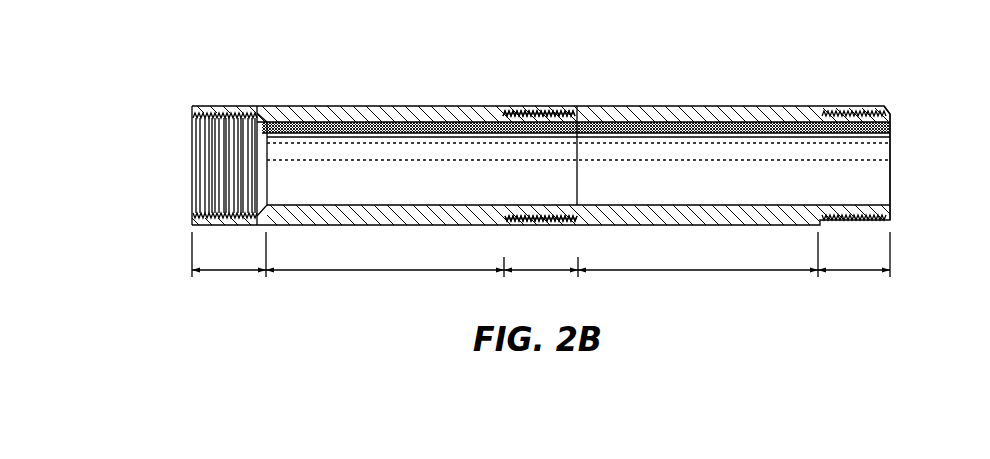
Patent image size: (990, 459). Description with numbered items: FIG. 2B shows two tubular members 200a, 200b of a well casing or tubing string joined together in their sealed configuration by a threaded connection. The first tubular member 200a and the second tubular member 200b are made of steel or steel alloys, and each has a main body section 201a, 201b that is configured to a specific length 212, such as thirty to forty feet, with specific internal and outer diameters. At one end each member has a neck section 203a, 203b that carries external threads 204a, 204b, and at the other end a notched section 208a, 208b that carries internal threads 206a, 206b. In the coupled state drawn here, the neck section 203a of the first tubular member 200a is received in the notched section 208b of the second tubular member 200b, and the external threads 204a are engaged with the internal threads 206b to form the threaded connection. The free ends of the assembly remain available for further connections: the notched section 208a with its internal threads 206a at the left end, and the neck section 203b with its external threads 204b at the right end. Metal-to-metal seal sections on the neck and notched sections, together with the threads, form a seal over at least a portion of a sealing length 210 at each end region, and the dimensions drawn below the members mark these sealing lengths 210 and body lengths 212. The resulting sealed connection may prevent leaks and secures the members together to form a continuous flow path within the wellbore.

The first tubular member 200a is at (326, 50).
The second tubular member 200b is at (713, 50).
The main body section 201a is at (363, 105).
The main body section 201b is at (647, 105).
The neck section 203a is at (536, 89).
The neck section 203b is at (885, 103).
The external threads 204a is at (533, 224).
The external threads 204b is at (877, 123).
The internal threads 206a is at (212, 158).
The internal threads 206b is at (553, 224).
The notched section 208a is at (257, 103).
The notched section 208b is at (572, 103).
The sealing length 210 is at (218, 272).
The specific length 212 is at (360, 272).